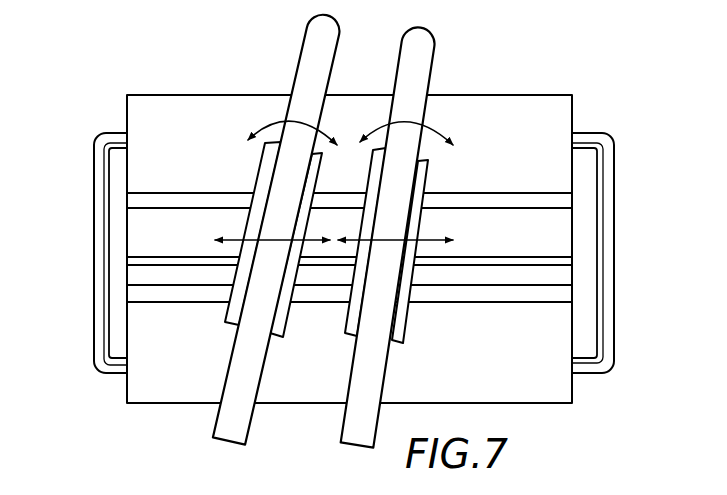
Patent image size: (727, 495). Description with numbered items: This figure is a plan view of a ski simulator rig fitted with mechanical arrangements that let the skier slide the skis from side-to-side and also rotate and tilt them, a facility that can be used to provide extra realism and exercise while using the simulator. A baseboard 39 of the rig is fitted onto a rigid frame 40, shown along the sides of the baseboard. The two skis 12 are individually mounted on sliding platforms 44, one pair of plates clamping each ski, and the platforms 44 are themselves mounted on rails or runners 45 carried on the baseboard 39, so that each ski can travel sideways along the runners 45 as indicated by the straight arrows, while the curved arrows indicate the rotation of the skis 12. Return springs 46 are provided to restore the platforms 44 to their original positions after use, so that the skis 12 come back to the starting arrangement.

The skis 12 is at (308, 64).
The baseboard 39 is at (488, 113).
The rigid frame 40 is at (96, 229).
The sliding platforms 44 is at (267, 175).
The rails or runners 45 is at (203, 199).
The return springs 46 is at (203, 262).